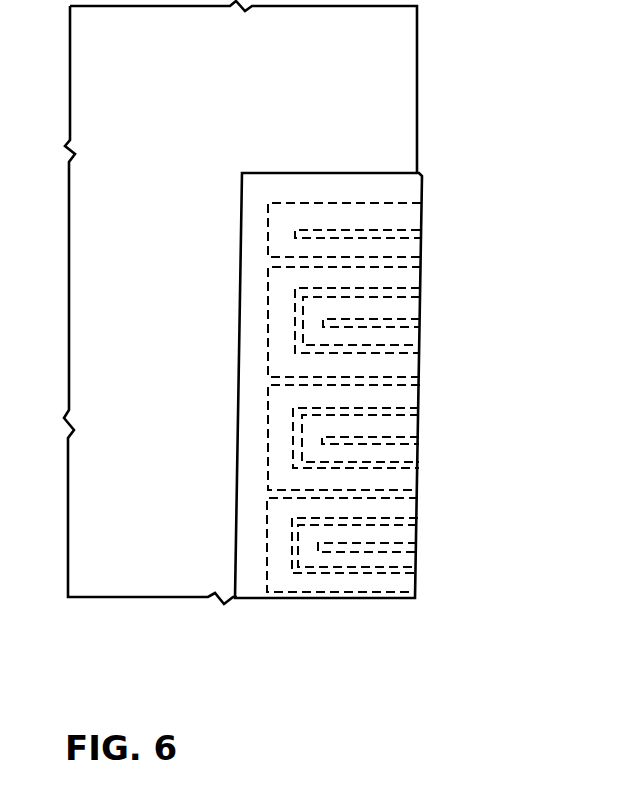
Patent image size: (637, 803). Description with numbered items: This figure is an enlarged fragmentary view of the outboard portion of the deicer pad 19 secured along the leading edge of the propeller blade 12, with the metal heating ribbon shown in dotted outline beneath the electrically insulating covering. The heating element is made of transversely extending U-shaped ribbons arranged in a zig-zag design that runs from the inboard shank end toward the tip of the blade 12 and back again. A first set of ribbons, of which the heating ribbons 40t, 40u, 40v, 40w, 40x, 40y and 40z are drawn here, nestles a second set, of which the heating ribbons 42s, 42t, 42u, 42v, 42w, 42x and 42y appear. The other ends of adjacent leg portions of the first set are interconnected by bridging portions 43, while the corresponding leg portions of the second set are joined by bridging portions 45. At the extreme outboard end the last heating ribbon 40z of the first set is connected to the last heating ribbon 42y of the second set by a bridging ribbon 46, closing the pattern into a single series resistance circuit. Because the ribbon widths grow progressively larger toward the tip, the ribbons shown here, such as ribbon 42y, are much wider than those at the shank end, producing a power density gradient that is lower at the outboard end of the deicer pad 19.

The propeller blade 12 is at (440, 80).
The deicer pad 19 is at (437, 188).
The heating ribbon 40z is at (353, 212).
The heating ribbon 40y is at (400, 308).
The heating ribbon 40x is at (400, 335).
The heating ribbon 40w is at (400, 423).
The heating ribbon 40v is at (400, 455).
The heating ribbon 40u is at (400, 537).
The heating ribbon 40t is at (400, 562).
The heating ribbon 42y is at (398, 248).
The heating ribbon 42x is at (400, 278).
The heating ribbon 42w is at (400, 367).
The heating ribbon 42v is at (400, 398).
The heating ribbon 42u is at (400, 480).
The heating ribbon 42t is at (400, 512).
The heating ribbon 42s is at (400, 585).
The bridging portion 43 is at (314, 330).
The bridging portion 45 is at (286, 311).
The bridging ribbon 46 is at (281, 232).